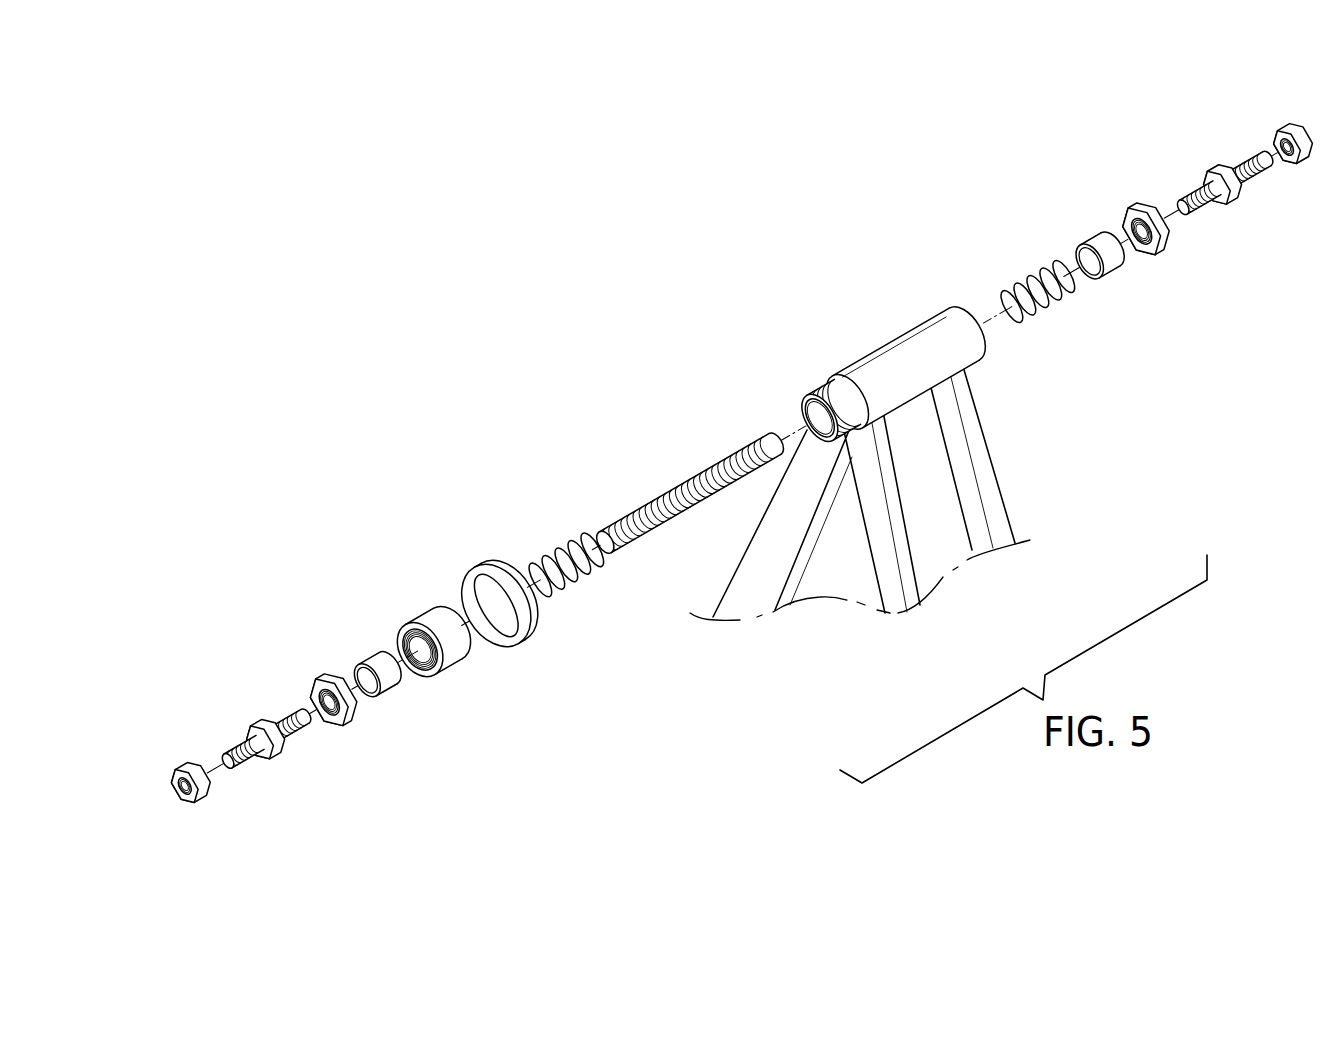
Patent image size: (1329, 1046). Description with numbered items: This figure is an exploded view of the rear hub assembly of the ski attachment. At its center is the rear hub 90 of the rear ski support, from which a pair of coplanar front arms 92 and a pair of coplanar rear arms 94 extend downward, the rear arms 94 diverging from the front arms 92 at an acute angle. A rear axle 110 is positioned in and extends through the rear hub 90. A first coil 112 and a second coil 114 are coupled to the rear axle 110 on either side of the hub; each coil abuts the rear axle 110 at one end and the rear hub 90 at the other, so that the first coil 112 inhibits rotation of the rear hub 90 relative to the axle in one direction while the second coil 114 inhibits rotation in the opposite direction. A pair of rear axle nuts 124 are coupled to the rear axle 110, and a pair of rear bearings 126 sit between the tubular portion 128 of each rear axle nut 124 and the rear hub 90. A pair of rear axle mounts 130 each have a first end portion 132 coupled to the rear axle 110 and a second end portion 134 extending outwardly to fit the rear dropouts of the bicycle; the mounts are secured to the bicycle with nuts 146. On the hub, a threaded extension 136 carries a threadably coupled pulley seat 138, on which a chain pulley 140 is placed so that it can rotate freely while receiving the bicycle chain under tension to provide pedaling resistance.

The rear hub 90 is at (900, 343).
The front arms 92 is at (913, 530).
The rear arms 94 is at (747, 558).
The rear axle 110 is at (689, 484).
The first coil 112 is at (573, 543).
The second coil 114 is at (1023, 283).
The rear axle nuts 124 is at (317, 687).
The rear bearings 126 is at (368, 657).
The tubular portion 128 is at (367, 698).
The rear axle mounts 130 is at (753, 460).
The first end portion 132 is at (290, 733).
The second end portion 134 is at (249, 763).
The threaded extension 136 is at (813, 387).
The pulley seat 138 is at (418, 615).
The chain pulley 140 is at (492, 562).
The nuts 146 is at (203, 773).